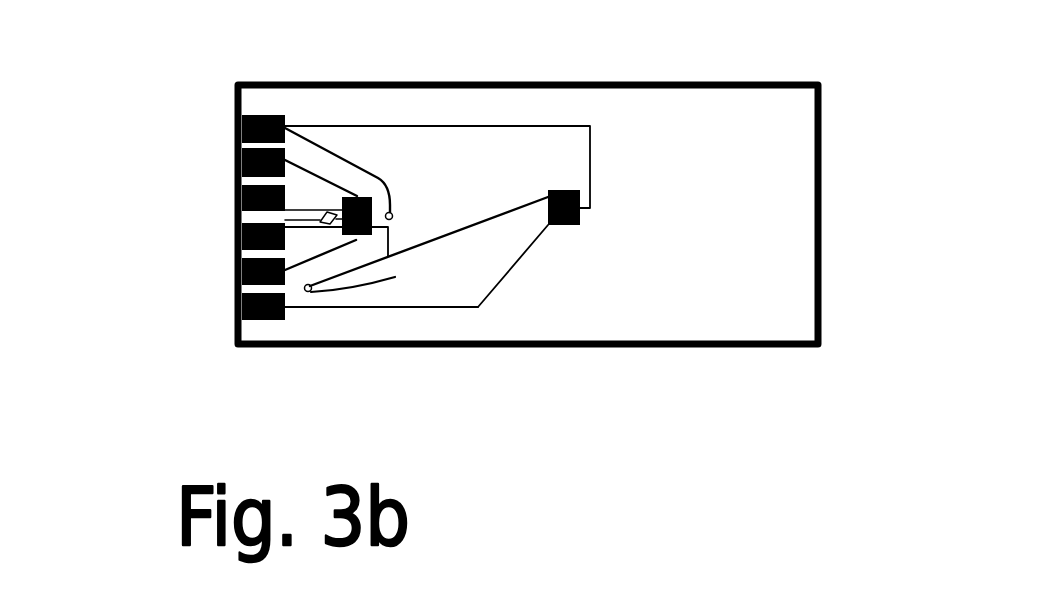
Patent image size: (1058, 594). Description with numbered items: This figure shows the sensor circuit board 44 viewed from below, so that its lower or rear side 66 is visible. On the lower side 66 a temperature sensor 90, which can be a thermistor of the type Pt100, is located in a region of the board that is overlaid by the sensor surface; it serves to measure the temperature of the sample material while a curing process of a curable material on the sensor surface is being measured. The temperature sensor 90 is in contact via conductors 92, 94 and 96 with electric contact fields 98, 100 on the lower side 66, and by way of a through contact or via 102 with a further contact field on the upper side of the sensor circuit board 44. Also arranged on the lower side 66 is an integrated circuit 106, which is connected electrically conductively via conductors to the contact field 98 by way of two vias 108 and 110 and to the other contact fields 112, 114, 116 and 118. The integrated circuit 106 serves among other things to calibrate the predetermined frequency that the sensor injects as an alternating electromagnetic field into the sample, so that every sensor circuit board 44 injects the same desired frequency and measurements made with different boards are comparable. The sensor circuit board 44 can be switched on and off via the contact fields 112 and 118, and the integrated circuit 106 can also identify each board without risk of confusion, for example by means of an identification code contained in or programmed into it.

The sensor circuit board 44 is at (822, 277).
The lower side 66 is at (793, 157).
The temperature sensor 90 is at (560, 227).
The conductor 92 is at (460, 127).
The conductor 94 is at (422, 307).
The conductor 96 is at (470, 227).
The electric contact field 98 is at (235, 130).
The electric contact field 100 is at (235, 310).
The through contact or via 102 is at (380, 278).
The integrated circuit 106 is at (381, 180).
The via 108 is at (235, 220).
The via 110 is at (394, 211).
The contact field 112 is at (235, 163).
The contact field 114 is at (235, 198).
The contact field 116 is at (235, 238).
The contact field 118 is at (235, 273).